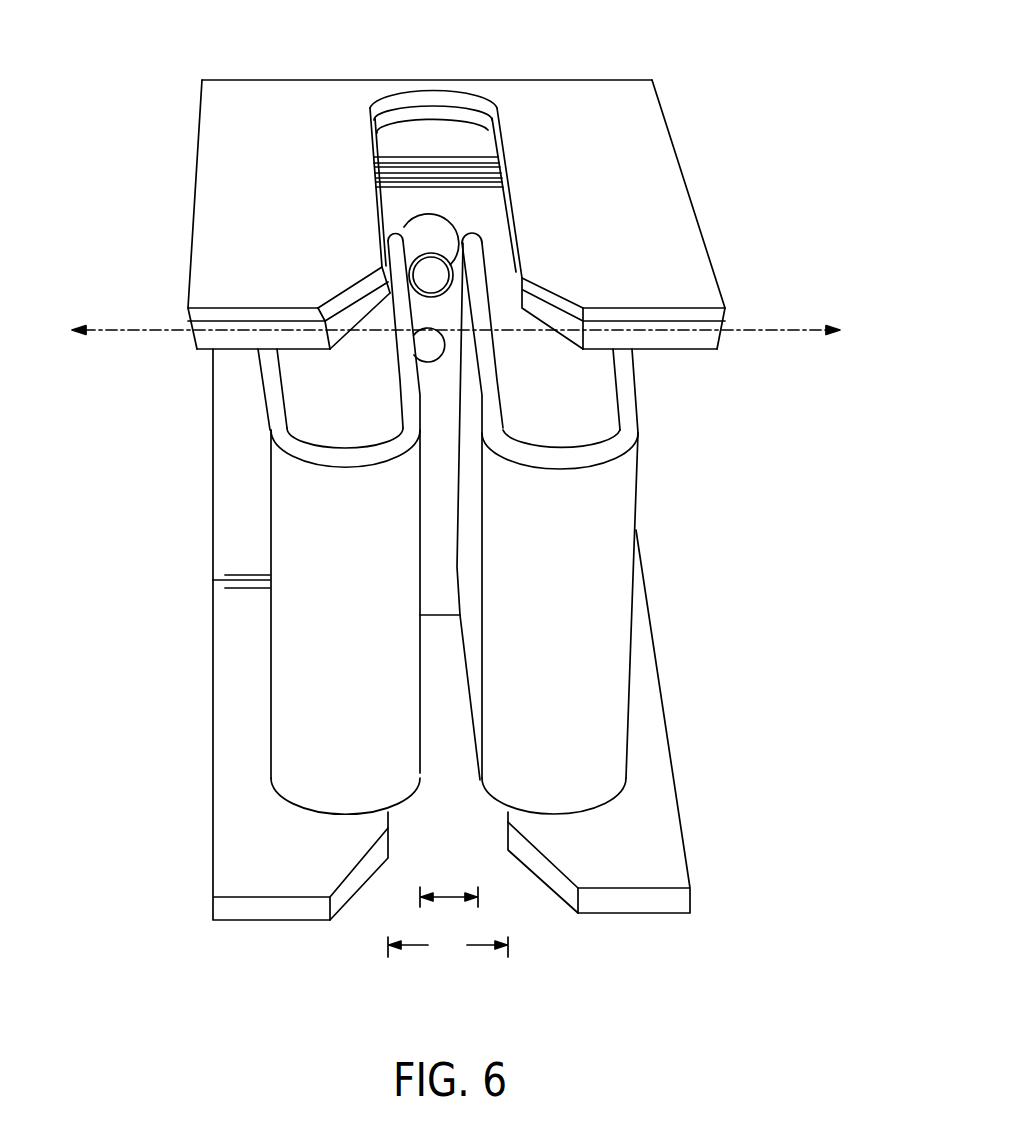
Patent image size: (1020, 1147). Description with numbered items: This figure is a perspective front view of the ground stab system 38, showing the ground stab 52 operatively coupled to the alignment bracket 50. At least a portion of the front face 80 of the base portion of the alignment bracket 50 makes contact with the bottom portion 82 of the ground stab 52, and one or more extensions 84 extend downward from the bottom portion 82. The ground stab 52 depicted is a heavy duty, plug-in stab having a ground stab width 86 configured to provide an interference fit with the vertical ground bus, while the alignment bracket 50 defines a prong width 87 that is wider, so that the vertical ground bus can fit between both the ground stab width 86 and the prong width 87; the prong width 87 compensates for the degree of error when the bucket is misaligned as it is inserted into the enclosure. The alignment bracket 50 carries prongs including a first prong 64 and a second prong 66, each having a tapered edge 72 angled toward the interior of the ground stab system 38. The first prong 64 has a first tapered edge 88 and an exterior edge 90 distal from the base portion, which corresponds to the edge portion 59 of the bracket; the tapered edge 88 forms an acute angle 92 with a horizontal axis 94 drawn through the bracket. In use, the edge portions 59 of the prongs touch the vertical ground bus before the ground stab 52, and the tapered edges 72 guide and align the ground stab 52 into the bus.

The ground stab system 38 is at (784, 138).
The alignment bracket 50 is at (592, 83).
The ground stab 52 is at (492, 800).
The edge portion 59 is at (263, 313).
The first prong 64 is at (222, 130).
The second prong 66 is at (693, 268).
The tapered edge 72 is at (566, 285).
The front face 80 is at (440, 157).
The bottom portion 82 is at (487, 212).
The extension 84 is at (270, 742).
The ground stab width 86 is at (450, 895).
The prong width 87 is at (448, 946).
The first tapered edge 88 is at (350, 288).
The exterior edge 90 is at (188, 318).
The acute angle 92 is at (352, 313).
The center axis 94 is at (142, 332).